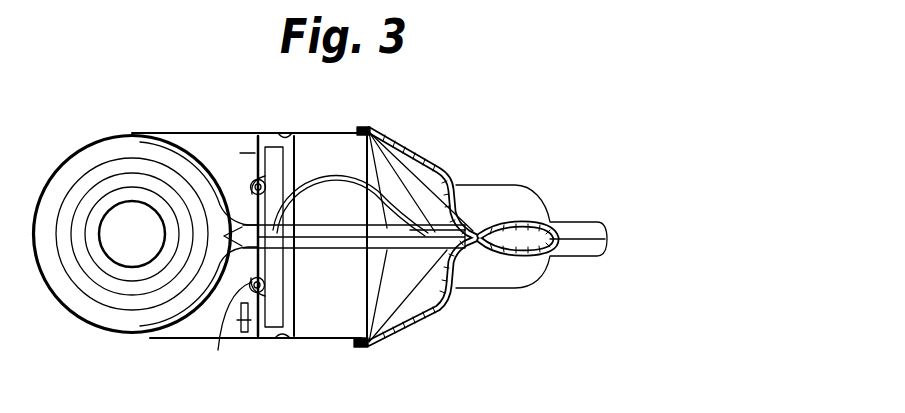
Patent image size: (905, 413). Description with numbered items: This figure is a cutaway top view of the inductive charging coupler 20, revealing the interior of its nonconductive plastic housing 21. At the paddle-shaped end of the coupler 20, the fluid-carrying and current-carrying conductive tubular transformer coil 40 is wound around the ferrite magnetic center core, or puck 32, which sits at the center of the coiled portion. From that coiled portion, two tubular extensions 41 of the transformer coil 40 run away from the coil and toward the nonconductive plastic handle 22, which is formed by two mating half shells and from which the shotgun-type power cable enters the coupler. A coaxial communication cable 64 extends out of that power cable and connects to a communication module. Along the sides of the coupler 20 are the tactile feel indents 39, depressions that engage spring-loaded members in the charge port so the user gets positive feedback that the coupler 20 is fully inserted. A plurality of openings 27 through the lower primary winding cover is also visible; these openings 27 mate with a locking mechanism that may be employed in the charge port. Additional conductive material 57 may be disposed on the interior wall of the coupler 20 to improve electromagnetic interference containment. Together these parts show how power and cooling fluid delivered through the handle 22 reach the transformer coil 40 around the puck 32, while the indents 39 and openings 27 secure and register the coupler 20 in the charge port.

The inductive charging coupler 20 is at (622, 335).
The nonconductive plastic housing 21 is at (537, 125).
The nonconductive plastic handle 22 is at (571, 220).
The openings 27 is at (222, 340).
The ferrite magnetic center core 32 is at (121, 249).
The tactile feel indents 39 is at (284, 131).
The transformer coil 40 is at (85, 163).
The tubular extensions 41 is at (333, 227).
The conductive material 57 is at (428, 158).
The coaxial communication cable 64 is at (333, 176).